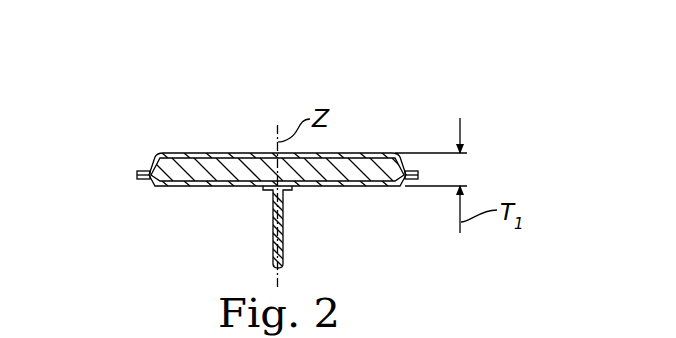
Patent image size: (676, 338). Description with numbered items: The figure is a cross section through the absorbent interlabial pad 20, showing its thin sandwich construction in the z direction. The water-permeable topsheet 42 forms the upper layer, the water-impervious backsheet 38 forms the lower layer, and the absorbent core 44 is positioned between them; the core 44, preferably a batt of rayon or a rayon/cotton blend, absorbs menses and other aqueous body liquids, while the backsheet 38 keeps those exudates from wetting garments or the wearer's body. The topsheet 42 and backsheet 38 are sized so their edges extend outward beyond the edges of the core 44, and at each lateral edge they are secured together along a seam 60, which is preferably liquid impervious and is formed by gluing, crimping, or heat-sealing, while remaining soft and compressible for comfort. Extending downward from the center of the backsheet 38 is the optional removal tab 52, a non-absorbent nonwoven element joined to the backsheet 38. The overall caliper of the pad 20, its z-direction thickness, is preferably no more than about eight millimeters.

The absorbent interlabial pad 20 is at (245, 175).
The backsheet 38 is at (343, 187).
The topsheet 42 is at (334, 153).
The absorbent core 44 is at (208, 188).
The removal tab 52 is at (284, 243).
The seam 60 is at (139, 170).